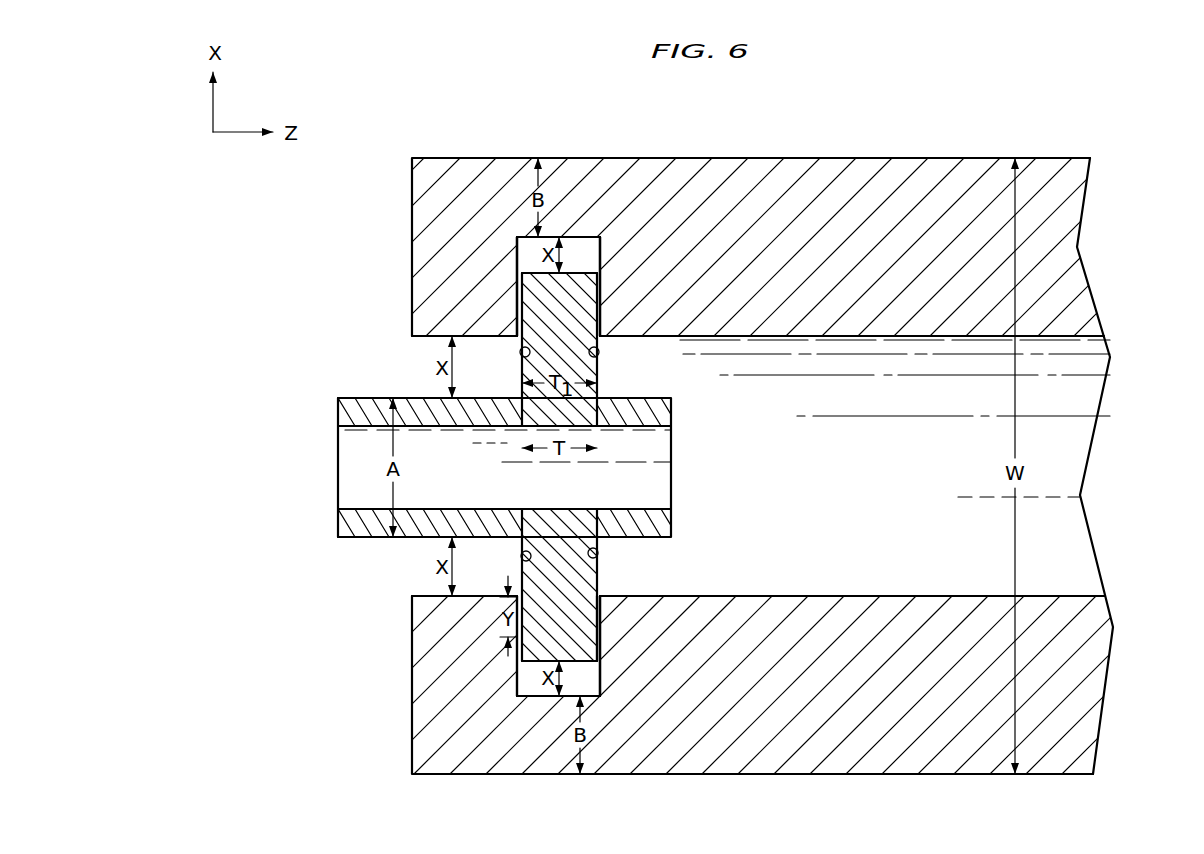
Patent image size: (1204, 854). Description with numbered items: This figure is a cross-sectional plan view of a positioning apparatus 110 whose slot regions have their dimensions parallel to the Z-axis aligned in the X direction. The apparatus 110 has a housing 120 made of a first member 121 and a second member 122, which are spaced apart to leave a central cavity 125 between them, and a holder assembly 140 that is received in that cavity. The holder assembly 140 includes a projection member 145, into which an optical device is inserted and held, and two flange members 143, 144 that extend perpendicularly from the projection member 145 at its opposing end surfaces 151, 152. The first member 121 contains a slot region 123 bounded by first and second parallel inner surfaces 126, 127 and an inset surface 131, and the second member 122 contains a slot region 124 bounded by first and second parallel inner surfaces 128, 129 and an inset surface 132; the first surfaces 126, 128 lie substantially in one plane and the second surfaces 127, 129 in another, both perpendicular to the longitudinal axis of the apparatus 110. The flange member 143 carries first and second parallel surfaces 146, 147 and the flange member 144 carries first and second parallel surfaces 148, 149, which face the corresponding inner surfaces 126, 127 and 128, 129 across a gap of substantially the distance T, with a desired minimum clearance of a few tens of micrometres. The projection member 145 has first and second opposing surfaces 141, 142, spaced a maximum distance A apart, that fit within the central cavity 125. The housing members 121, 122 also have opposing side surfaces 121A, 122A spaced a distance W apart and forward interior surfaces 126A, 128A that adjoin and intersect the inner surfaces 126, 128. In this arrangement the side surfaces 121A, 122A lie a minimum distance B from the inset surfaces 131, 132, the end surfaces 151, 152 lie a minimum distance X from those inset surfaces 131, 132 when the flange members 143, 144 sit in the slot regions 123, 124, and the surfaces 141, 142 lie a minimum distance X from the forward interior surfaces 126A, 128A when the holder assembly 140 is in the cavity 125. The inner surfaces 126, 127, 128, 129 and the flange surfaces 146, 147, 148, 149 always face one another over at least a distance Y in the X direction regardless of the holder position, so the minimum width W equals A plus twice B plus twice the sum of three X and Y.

The positioning apparatus 110 is at (888, 108).
The housing 120 is at (592, 792).
The first member 121 is at (707, 728).
The side surface 121A is at (858, 775).
The second member 122 is at (455, 178).
The side surface 122A is at (952, 158).
The slot region 123 is at (599, 633).
The slot region 124 is at (532, 263).
The central cavity 125 is at (1055, 437).
The first parallel inner surface 126 is at (517, 677).
The forward interior surface 126A is at (422, 596).
The second parallel inner surface 127 is at (601, 647).
The first parallel inner surface 128 is at (518, 273).
The forward interior surface 128A is at (412, 340).
The second parallel inner surface 129 is at (600, 278).
The inset surface 131 is at (535, 700).
The inset surface 132 is at (568, 237).
The holder assembly 140 is at (336, 552).
The first opposing surface 141 is at (375, 538).
The second opposing surface 142 is at (405, 398).
The flange member 143 is at (558, 580).
The flange member 144 is at (582, 302).
The projection member 145 is at (348, 452).
The first parallel surface 146 is at (529, 557).
The second parallel surface 147 is at (592, 552).
The first parallel surface 148 is at (521, 354).
The second parallel surface 149 is at (599, 357).
The end surface 151 is at (568, 660).
The end surface 152 is at (560, 274).